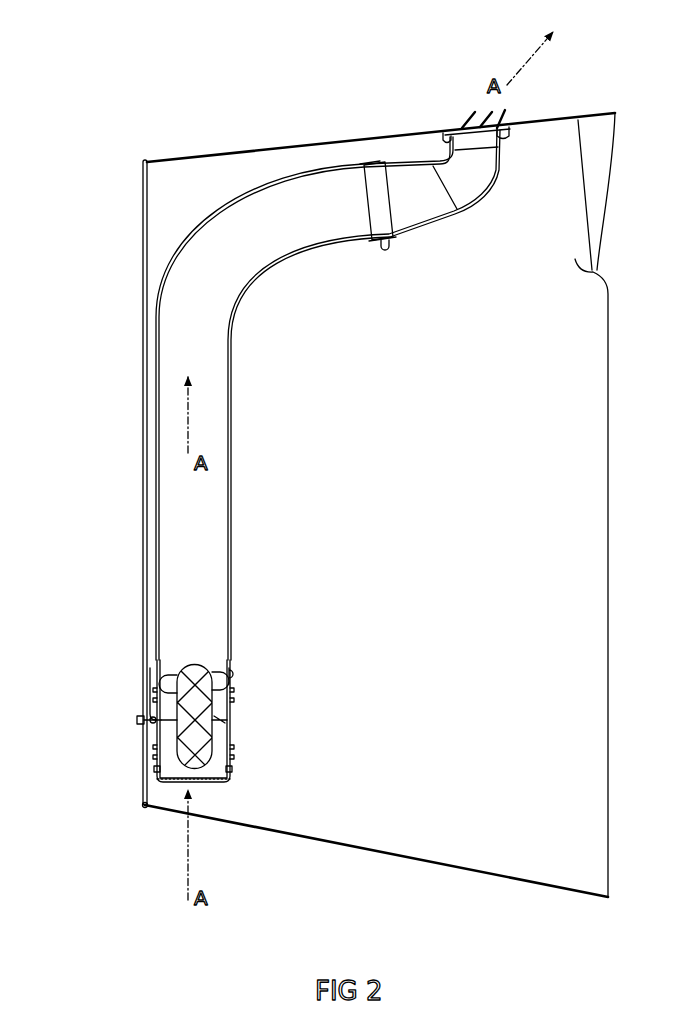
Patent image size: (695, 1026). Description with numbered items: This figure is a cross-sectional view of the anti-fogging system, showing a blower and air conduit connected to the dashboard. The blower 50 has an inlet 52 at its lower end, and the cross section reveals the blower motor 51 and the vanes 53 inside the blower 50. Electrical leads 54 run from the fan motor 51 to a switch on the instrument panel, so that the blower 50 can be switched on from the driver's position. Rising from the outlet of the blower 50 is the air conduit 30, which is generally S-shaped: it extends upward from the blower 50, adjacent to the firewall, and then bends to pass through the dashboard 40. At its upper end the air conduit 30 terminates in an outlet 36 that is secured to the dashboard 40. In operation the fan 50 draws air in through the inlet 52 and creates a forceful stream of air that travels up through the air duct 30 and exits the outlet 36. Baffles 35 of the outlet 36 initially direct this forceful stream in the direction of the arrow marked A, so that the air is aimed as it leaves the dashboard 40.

The air conduit 30 is at (217, 215).
The baffles 35 is at (497, 126).
The outlet 36 is at (457, 130).
The dashboard 40 is at (562, 117).
The blower 50 is at (230, 728).
The blower motor 51 is at (205, 745).
The inlet 52 is at (177, 782).
The vanes 53 is at (218, 683).
The electrical leads 54 is at (143, 723).